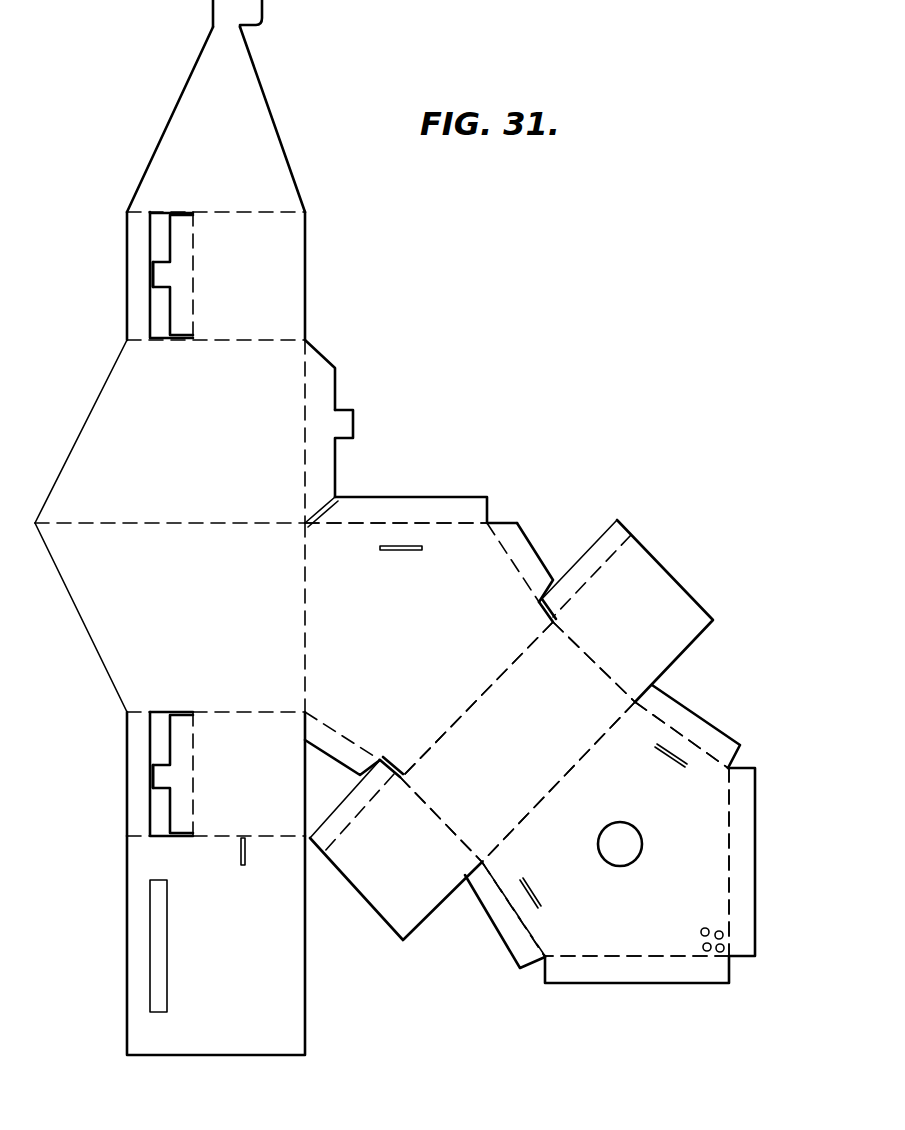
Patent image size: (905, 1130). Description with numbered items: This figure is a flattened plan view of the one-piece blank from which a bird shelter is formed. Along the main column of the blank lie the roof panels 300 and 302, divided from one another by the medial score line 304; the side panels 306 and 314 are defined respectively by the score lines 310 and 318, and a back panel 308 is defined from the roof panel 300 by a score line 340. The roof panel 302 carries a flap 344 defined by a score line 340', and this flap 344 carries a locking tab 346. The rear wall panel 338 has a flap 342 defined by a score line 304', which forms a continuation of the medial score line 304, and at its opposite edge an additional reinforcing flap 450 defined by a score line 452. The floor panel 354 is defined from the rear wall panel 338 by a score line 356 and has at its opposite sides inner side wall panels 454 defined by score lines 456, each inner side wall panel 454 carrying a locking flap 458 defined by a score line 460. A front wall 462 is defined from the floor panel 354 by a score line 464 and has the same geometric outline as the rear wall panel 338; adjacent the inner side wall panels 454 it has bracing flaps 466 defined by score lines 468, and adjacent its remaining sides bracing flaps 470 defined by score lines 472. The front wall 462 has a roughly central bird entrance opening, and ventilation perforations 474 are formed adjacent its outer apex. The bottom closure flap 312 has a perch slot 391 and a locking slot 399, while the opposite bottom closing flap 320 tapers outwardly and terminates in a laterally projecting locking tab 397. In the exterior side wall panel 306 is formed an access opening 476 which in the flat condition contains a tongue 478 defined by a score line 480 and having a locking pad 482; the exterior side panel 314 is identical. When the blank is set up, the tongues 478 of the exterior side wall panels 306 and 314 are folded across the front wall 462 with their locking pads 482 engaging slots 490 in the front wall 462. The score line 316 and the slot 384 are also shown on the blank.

The roof panel 300 is at (209, 610).
The roof panel 302 is at (202, 457).
The score line 304 is at (170, 501).
The score line 304' is at (396, 545).
The side panel 306 is at (274, 795).
The back panel 308 is at (268, 712).
The score line 310 is at (277, 840).
The bottom closure flap 312 is at (258, 952).
The side panel 314 is at (276, 284).
The fold line 316 is at (250, 342).
The score line 318 is at (265, 212).
The bottom closing flap 320 is at (232, 147).
The rear wall panel 338 is at (432, 652).
The score line 340 is at (275, 617).
The score line 340' is at (271, 431).
The flap 342 is at (420, 504).
The flap 344 is at (334, 376).
The locking tab 346 is at (356, 422).
The floor panel 354 is at (556, 720).
The score line 356 is at (515, 655).
The slot 384 is at (410, 553).
The perch slot 391 is at (148, 926).
The locking tab 397 is at (263, 15).
The locking slot 399 is at (240, 855).
The reinforcing flap 450 is at (540, 552).
The score line 452 is at (518, 565).
The inner side wall panel 454 is at (642, 624).
The score line 456 is at (600, 668).
The locking flap 458 is at (648, 514).
The score line 460 is at (598, 590).
The front wall 462 is at (614, 810).
The score line 464 is at (545, 795).
The bracing flap 466 is at (705, 725).
The score line 468 is at (668, 728).
The bracing flap 470 is at (745, 875).
The score line 472 is at (729, 876).
The ventilation perforations 474 is at (704, 925).
The access opening 476 is at (160, 305).
The tongue 478 is at (186, 214).
The score line 480 is at (193, 270).
The locking pad 482 is at (150, 263).
The slot 490 is at (660, 765).